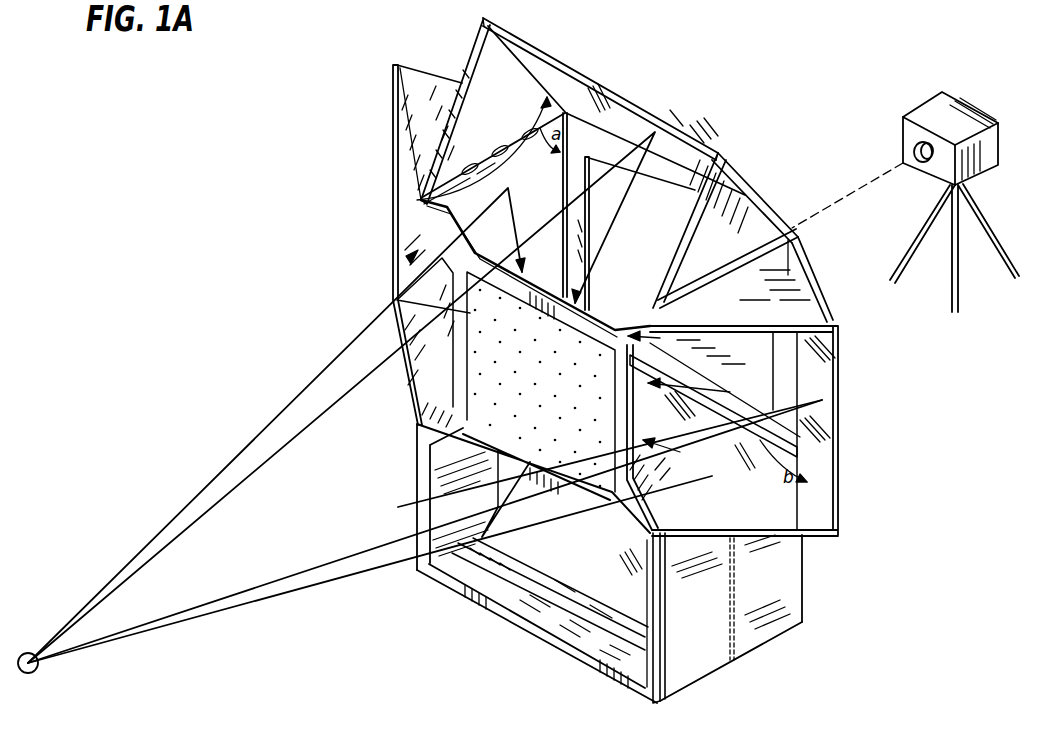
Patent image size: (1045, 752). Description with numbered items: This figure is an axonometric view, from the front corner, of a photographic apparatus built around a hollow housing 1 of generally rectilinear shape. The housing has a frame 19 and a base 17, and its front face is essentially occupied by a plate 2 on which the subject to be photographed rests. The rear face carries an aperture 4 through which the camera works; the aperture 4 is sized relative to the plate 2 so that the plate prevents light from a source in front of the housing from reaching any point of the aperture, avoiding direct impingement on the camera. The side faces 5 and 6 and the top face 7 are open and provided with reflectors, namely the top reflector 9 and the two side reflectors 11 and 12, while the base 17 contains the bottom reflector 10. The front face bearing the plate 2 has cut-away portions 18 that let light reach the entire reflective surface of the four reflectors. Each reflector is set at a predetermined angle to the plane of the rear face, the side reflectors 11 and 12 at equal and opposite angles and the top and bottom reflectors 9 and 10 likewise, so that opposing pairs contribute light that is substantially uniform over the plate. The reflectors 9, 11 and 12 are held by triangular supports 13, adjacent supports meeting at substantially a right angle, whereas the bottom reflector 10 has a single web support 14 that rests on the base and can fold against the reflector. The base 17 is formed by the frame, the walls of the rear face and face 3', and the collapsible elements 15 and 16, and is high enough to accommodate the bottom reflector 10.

The hollow housing 1 is at (641, 90).
The plate 2 is at (421, 420).
The face 3' is at (637, 366).
The aperture 4 is at (728, 188).
The side face 5 is at (797, 508).
The side face 6 is at (440, 168).
The top face 7 is at (490, 84).
The top reflector 9 is at (697, 128).
The bottom reflector 10 is at (540, 550).
The side reflector 11 is at (393, 190).
The side reflector 12 is at (837, 392).
The triangular support 13 is at (790, 226).
The support 14 is at (560, 620).
The collapsible element 15 is at (443, 498).
The collapsible element 16 is at (773, 625).
The base 17 is at (803, 580).
The cut-away portions 18 is at (397, 300).
The frame 19 is at (668, 696).